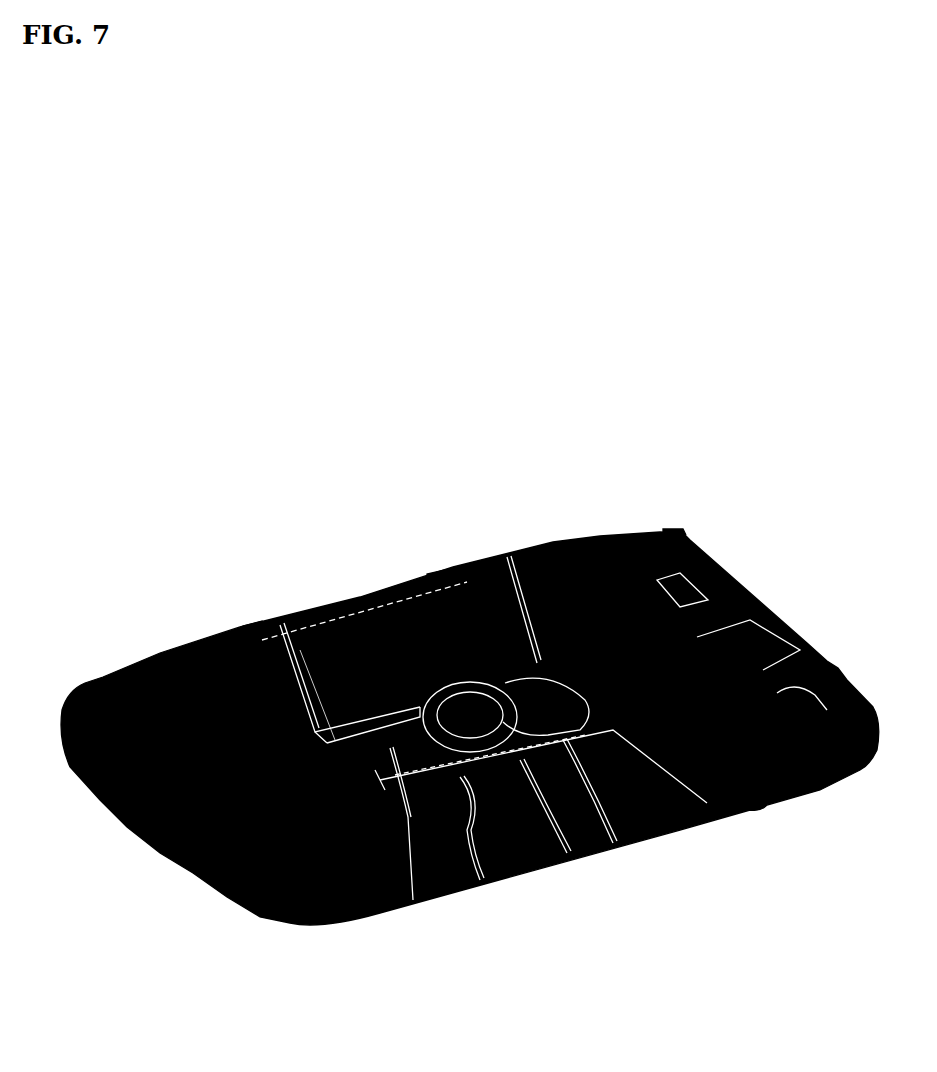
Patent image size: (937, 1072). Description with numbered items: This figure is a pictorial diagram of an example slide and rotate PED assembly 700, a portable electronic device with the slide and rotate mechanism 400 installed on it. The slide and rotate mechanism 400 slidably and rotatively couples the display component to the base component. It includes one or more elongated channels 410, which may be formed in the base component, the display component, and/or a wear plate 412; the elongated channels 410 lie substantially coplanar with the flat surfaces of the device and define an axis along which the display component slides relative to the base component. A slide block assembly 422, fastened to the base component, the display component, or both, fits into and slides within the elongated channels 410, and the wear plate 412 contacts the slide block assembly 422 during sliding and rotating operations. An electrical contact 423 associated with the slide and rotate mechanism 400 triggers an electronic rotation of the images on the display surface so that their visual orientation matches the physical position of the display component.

The slide and rotate PED assembly 700 is at (728, 176).
The slide and rotate mechanism 400 is at (507, 557).
The elongated channel 410 is at (413, 900).
The wear plate 412 is at (483, 883).
The slide block assembly 422 is at (570, 860).
The electrical contact 423 is at (613, 847).